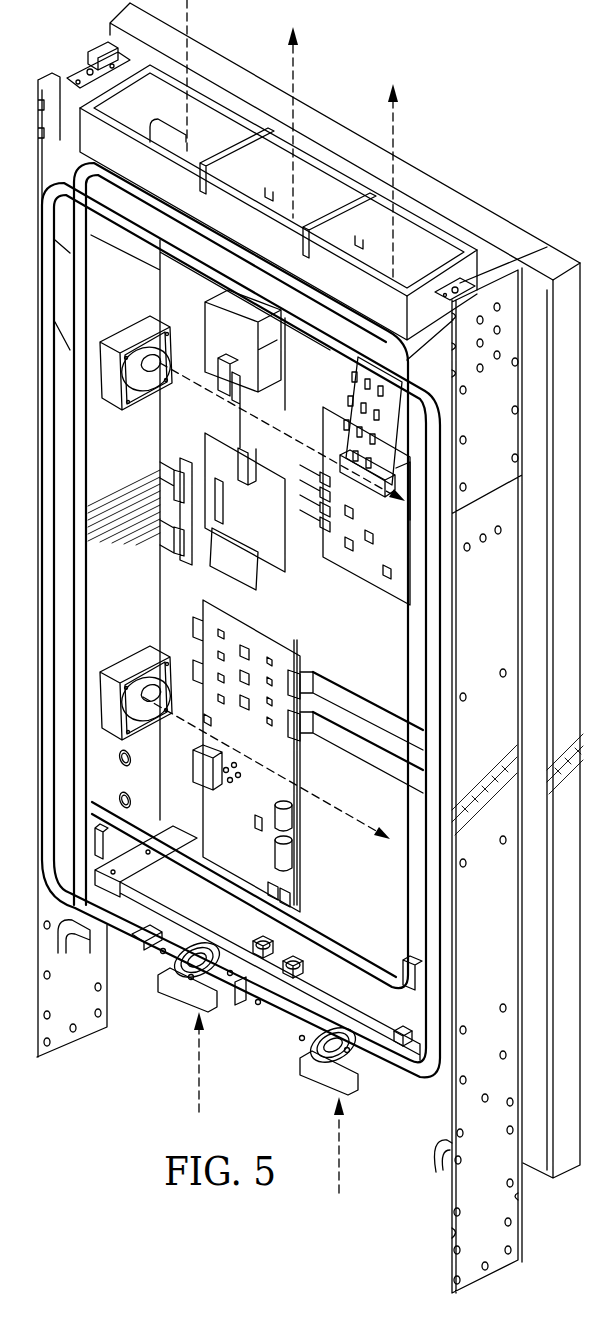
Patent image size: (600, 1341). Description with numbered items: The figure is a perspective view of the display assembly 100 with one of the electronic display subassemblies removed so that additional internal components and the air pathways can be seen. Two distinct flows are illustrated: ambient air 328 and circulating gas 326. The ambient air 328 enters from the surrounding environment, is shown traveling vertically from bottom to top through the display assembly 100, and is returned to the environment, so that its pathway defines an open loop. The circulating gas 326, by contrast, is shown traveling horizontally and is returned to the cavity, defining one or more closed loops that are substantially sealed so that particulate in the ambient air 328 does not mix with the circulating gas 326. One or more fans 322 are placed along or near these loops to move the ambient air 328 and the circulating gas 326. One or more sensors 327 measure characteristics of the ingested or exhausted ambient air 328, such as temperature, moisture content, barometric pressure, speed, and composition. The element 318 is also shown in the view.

The display assembly 100 is at (508, 52).
The circuit board 318 is at (278, 652).
The fan 322 is at (137, 322).
The circulating gas 326 is at (290, 432).
The sensor 327 is at (145, 942).
The ambient air 328 is at (397, 128).